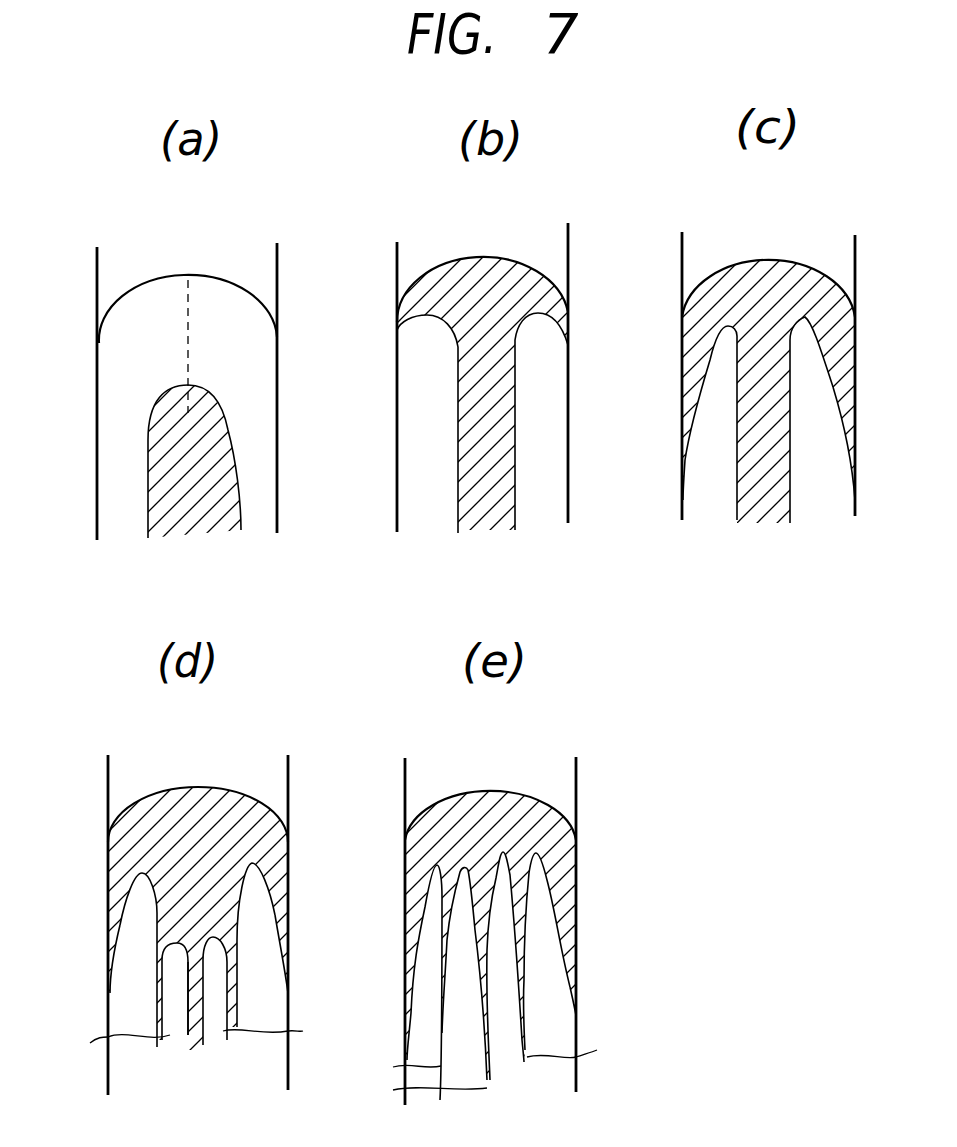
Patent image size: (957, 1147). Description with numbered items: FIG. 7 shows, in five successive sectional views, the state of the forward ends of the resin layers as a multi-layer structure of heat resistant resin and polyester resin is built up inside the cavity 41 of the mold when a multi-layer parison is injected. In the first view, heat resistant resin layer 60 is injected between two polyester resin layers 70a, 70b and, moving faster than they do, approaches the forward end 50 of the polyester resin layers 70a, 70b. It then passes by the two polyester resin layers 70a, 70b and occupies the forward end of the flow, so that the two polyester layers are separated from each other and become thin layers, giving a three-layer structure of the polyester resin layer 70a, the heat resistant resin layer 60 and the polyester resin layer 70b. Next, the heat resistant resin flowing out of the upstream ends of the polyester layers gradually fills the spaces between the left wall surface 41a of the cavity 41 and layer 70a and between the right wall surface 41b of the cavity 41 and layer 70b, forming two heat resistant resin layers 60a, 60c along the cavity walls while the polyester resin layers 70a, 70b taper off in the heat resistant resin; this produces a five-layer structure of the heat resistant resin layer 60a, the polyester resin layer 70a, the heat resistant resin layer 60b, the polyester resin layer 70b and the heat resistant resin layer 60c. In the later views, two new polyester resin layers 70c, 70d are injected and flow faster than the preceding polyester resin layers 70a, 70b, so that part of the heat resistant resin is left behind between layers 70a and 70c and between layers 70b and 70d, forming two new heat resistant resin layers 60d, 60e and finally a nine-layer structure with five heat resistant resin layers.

The cavity 41 is at (172, 268).
The left wall surface of the cavity 41a is at (688, 263).
The right wall surface of the cavity 41b is at (852, 250).
The forward end of the polyester resin layers 50 is at (208, 278).
The heat resistant resin layer 60 is at (198, 513).
The heat resistant resin layer 60a is at (683, 390).
The heat resistant resin layer 60b is at (774, 495).
The heat resistant resin layer 60c is at (847, 416).
The heat resistant resin layer 60d is at (393, 1064).
The heat resistant resin layer 60e is at (585, 1048).
The polyester resin layer 70a is at (110, 405).
The polyester resin layer 70b is at (267, 408).
The polyester resin layer 70c is at (109, 1049).
The polyester resin layer 70d is at (282, 1037).